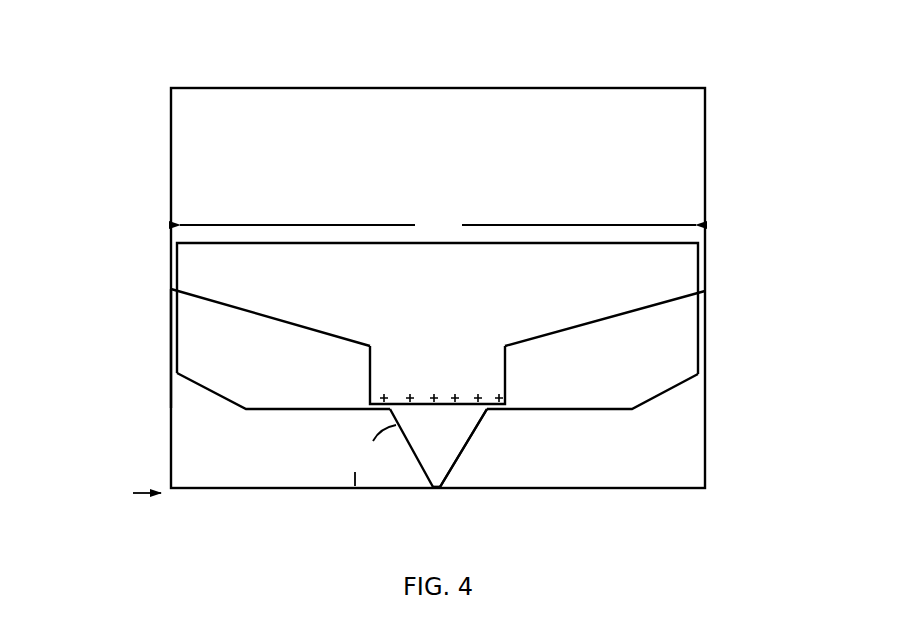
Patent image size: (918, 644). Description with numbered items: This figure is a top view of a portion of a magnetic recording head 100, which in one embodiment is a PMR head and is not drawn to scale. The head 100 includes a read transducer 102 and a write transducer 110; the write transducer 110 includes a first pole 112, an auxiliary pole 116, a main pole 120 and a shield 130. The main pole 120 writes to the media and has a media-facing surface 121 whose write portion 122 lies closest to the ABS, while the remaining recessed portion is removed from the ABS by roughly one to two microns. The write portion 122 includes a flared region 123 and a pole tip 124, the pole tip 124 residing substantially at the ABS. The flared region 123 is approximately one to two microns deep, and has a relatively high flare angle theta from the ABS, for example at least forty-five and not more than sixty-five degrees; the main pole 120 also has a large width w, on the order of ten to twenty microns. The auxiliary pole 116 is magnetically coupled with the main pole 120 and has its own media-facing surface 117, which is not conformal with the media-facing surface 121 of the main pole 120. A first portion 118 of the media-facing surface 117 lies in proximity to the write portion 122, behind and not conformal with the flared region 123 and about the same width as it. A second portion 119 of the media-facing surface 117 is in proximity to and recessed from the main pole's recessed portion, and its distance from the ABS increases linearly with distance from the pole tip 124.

The magnetic recording head 100 is at (117, 69).
The write transducer 110 is at (136, 210).
The auxiliary pole 116 is at (705, 150).
The main pole 120 is at (655, 242).
The shield 130 is at (134, 345).
The first pole (P1) 112 is at (134, 345).
The read transducer 102 is at (171, 408).
The media-facing surface 121 is at (302, 427).
The media-facing surface 117 is at (518, 360).
The first portion 118 is at (459, 417).
The flared region 123 is at (471, 455).
The pole tip 124 is at (421, 478).
The write portion 122 is at (387, 501).
The second portion 119 is at (170, 78).